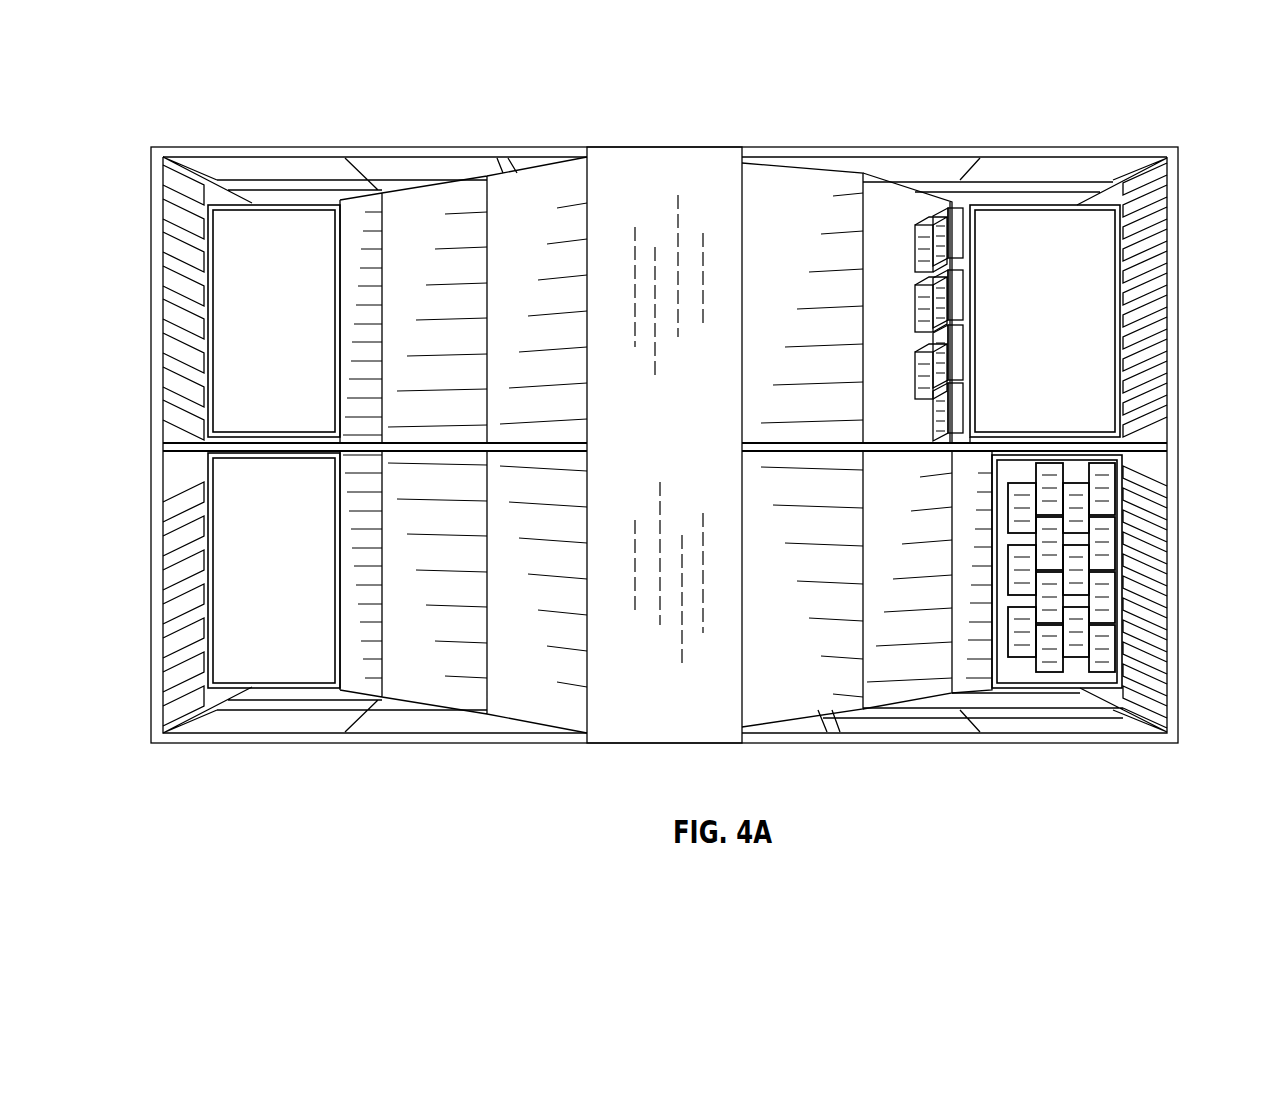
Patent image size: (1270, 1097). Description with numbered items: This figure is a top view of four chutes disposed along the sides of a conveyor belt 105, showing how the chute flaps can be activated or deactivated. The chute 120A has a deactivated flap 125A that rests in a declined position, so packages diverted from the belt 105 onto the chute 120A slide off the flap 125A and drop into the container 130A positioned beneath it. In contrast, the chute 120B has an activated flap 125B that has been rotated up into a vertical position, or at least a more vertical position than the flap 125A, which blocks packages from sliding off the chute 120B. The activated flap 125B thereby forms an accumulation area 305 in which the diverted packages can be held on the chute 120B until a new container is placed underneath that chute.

The conveyor belt 105 is at (620, 162).
The chute 120A is at (815, 712).
The chute 120B is at (805, 161).
The deactivated flap 125A is at (957, 683).
The activated flap 125B is at (968, 198).
The container 130A is at (1123, 612).
The accumulation area 305 is at (882, 232).